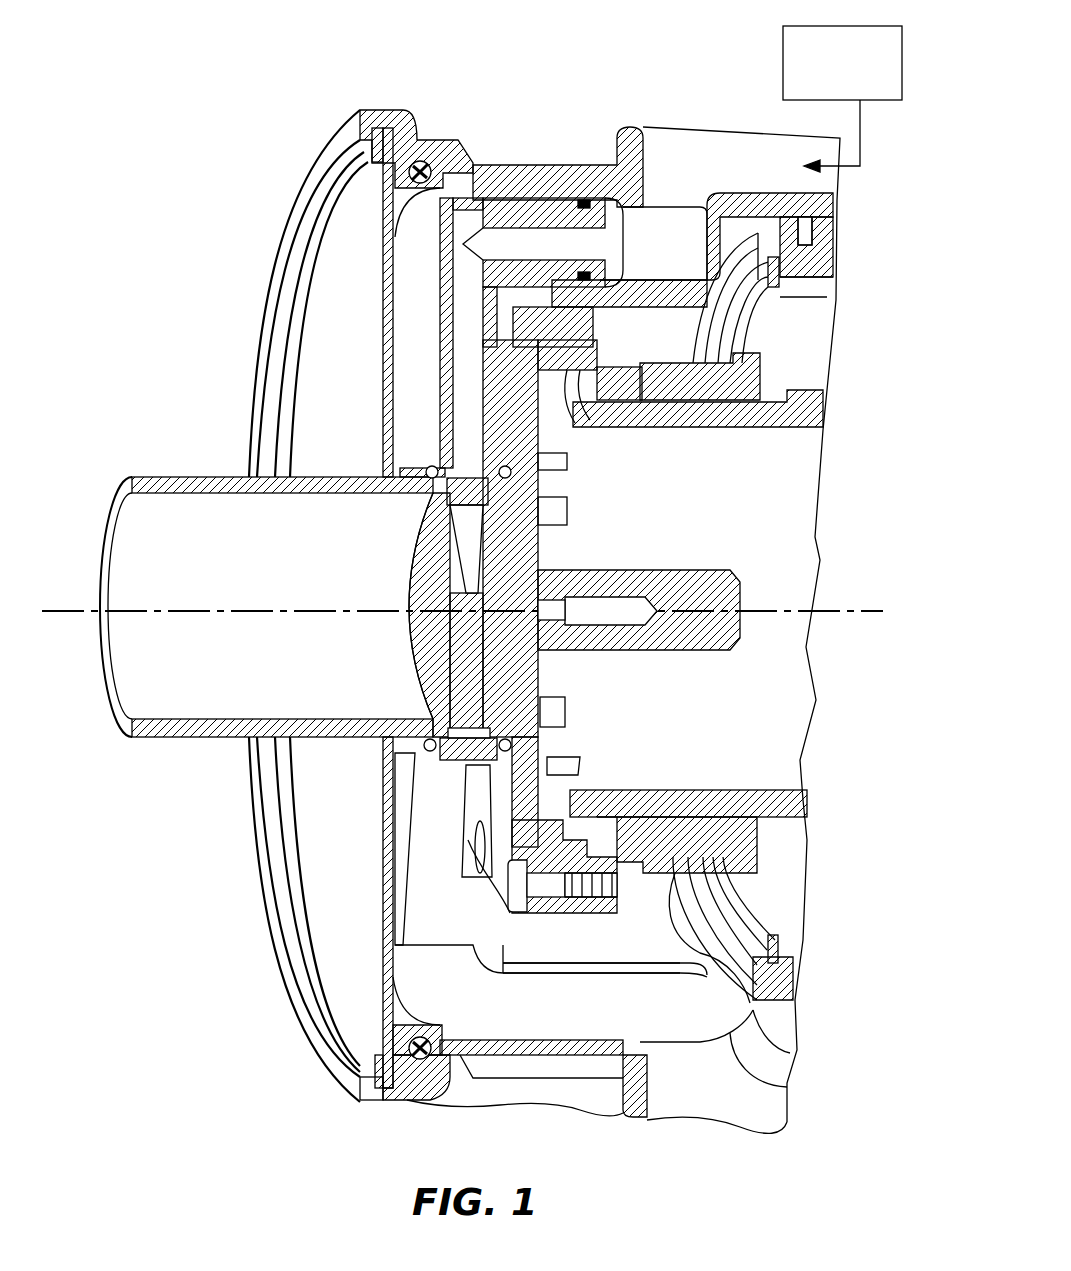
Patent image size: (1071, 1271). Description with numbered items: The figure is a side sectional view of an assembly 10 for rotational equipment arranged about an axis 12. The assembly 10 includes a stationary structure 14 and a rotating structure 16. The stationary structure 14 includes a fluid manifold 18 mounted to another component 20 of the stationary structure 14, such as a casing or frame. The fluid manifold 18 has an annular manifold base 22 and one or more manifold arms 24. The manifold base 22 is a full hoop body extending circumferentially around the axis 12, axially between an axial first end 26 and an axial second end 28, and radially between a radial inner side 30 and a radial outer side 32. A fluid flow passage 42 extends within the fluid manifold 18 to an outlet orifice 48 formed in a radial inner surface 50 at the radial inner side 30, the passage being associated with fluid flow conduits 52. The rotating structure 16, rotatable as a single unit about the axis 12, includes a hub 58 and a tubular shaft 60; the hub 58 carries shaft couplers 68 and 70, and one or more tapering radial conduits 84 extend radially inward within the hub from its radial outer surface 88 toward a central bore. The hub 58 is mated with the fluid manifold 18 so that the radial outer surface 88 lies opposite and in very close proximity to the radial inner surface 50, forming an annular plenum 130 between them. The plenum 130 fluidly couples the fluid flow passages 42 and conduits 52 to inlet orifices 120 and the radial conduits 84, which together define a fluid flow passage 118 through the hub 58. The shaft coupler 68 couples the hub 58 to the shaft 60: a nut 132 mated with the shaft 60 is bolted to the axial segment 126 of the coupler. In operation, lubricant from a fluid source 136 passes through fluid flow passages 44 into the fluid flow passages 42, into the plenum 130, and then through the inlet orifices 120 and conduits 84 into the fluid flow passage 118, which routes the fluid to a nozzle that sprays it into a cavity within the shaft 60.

The assembly 10 is at (222, 150).
The axis 12 is at (62, 613).
The stationary structure 14 is at (381, 108).
The rotating structure 16 is at (106, 747).
The fluid manifold 18 is at (495, 198).
The component 20 is at (562, 165).
The manifold base 22 is at (440, 438).
The manifold arm 24 is at (393, 322).
The axial first end 26 is at (440, 755).
The axial second end 28 is at (545, 748).
The radial inner side 30 is at (520, 705).
The radial outer side 32 is at (555, 775).
The fluid flow passage 42 is at (468, 312).
The fluid flow passage 44 is at (670, 176).
The outlet orifice 48 is at (447, 490).
The radial inner surface 50 is at (510, 538).
The fluid flow conduit 52 is at (465, 378).
The hub 58 is at (165, 468).
The shaft 60 is at (805, 410).
The shaft coupler 68 is at (508, 885).
The shaft coupler 70 is at (174, 748).
The radial conduit 84 is at (450, 530).
The radial outer surface 88 is at (447, 772).
The fluid flow passage 118 is at (555, 602).
The inlet orifice 120 is at (540, 492).
The axial segment 126 is at (550, 910).
The plenum 130 is at (448, 722).
The nut 132 is at (740, 385).
The fluid source 136 is at (783, 65).